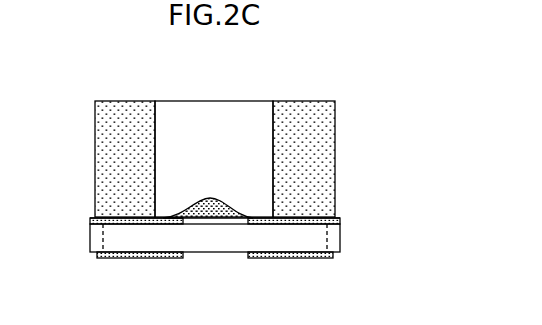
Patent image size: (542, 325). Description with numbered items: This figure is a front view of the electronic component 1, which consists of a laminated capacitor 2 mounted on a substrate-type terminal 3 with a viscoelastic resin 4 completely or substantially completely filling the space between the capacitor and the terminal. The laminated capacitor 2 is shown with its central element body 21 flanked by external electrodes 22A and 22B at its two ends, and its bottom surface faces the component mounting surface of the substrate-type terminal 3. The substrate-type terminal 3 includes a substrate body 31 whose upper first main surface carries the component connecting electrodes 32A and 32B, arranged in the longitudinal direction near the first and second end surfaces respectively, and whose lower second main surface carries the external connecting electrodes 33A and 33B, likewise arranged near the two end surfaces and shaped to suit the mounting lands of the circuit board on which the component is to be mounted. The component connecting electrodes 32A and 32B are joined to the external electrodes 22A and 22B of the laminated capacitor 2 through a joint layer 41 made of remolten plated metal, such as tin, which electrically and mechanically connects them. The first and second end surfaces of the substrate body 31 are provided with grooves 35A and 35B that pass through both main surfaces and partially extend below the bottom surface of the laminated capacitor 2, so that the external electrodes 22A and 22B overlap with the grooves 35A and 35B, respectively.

The electronic component 1 is at (408, 115).
The laminated capacitor 2 is at (350, 91).
The element body 21 is at (202, 100).
The external electrode 22A is at (118, 100).
The external electrode 22B is at (293, 100).
The substrate-type terminal 3 is at (72, 274).
The substrate body 31 is at (215, 247).
The component connecting electrode 32A is at (125, 225).
The component connecting electrode 32B is at (302, 225).
The external connecting electrode 33A is at (142, 258).
The external connecting electrode 33B is at (287, 258).
The groove 35A is at (96, 240).
The groove 35B is at (336, 240).
The viscoelastic resin 4 is at (238, 224).
The joint layer 41 is at (90, 220).